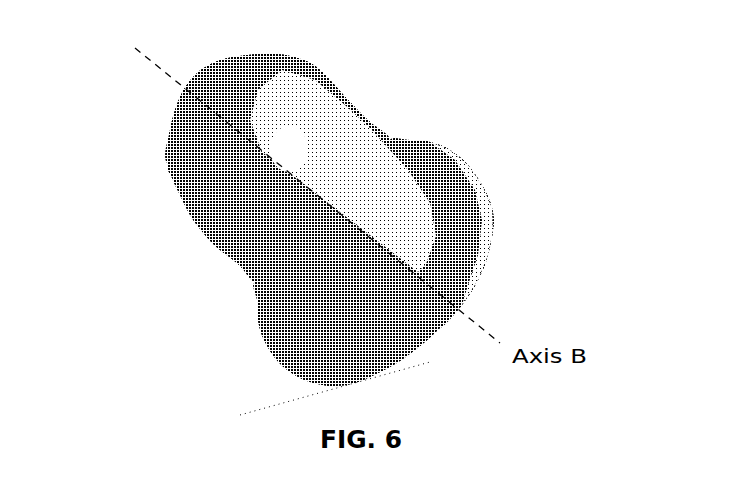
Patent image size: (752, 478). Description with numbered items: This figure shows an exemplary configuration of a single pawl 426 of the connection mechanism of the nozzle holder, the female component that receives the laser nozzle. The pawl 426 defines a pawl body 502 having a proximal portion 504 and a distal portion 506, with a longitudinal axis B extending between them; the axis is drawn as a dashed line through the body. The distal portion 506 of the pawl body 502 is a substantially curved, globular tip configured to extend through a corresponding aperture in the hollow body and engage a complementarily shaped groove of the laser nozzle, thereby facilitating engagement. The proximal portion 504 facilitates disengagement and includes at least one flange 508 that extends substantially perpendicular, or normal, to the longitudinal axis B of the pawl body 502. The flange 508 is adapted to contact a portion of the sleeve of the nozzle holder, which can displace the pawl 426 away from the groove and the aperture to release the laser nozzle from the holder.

The pawl 426 is at (180, 284).
The pawl body 502 is at (190, 160).
The proximal portion 504 is at (480, 150).
The distal portion 506 is at (343, 60).
The flange 508 is at (473, 240).